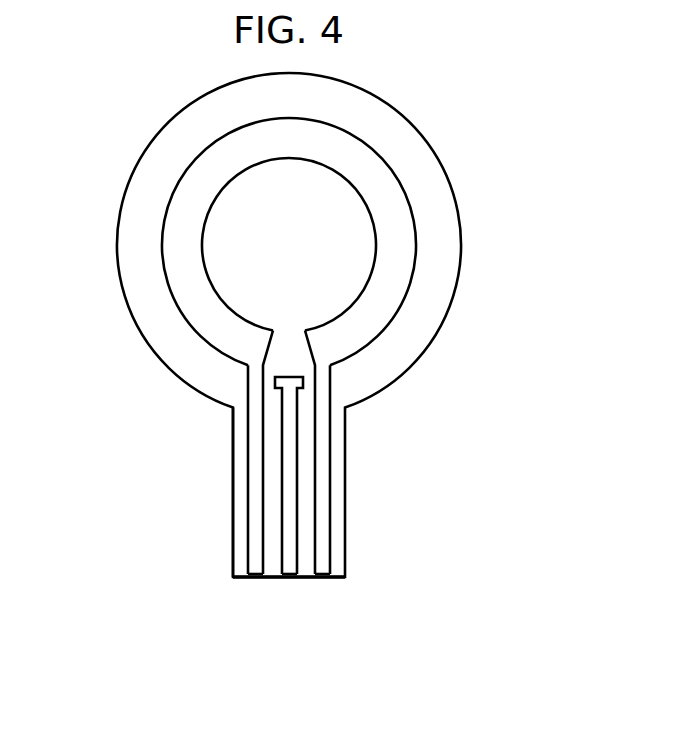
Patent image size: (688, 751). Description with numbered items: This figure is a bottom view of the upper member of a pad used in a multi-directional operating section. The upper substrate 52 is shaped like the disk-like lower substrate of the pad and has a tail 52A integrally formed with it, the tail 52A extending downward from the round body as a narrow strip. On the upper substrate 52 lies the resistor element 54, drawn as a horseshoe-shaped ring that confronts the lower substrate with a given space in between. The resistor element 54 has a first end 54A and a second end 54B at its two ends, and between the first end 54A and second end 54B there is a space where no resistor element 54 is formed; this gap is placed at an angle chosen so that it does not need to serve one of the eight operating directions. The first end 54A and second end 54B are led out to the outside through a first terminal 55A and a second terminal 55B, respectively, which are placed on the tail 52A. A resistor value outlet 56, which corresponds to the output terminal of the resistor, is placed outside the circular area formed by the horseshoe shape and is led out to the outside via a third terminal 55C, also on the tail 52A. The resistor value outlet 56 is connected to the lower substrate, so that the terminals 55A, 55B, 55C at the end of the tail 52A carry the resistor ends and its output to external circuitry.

The upper substrate 52 is at (147, 158).
The tail 52A is at (240, 475).
The resistor element 54 is at (367, 157).
The first end 54A is at (273, 330).
The second end 54B is at (305, 330).
The resistor value outlet 56 is at (300, 383).
The first terminal 55A is at (257, 578).
The second terminal 55B is at (323, 577).
The third terminal 55C is at (290, 577).